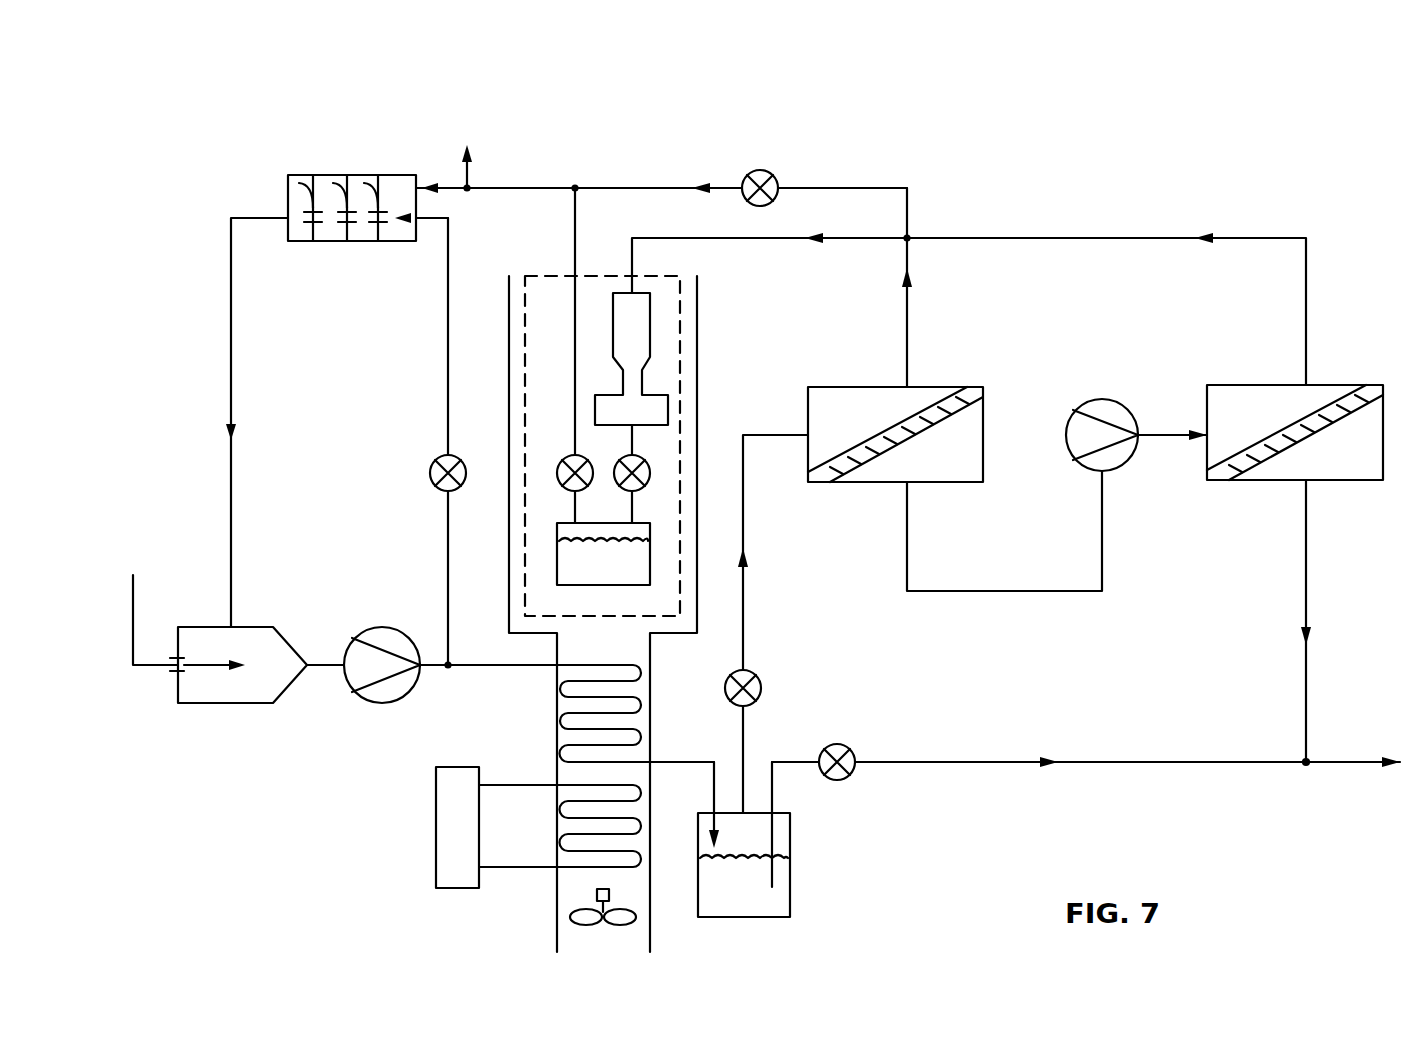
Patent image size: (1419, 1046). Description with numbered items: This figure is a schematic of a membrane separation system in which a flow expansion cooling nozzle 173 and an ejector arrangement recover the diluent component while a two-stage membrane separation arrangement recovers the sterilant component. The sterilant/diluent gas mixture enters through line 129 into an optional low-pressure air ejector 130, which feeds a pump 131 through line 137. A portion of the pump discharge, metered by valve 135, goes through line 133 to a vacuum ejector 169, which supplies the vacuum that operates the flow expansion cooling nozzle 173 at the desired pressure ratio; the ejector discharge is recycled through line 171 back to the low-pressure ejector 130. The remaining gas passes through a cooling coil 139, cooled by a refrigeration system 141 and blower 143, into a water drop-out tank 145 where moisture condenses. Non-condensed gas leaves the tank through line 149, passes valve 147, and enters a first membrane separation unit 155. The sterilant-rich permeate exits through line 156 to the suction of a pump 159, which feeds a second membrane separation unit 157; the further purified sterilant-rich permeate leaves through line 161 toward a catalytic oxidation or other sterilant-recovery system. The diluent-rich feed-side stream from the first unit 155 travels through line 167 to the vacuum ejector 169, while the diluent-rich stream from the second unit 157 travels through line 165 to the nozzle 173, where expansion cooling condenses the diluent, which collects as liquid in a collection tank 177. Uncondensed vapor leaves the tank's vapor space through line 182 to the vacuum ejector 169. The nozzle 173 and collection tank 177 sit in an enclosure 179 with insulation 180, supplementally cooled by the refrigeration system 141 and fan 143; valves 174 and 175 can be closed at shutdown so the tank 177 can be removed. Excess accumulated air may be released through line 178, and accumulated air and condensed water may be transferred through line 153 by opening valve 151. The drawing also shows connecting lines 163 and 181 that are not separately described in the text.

The line 129 is at (133, 578).
The low-pressure air ejector 130 is at (248, 703).
The pump 131 is at (380, 627).
The line 133 is at (447, 548).
The valve 135 is at (436, 461).
The line 137 is at (508, 667).
The cooling coil 139 is at (566, 694).
The refrigeration system 141 is at (436, 805).
The blower 143 is at (588, 924).
The water drop-out tank 145 is at (790, 878).
The valve 147 is at (752, 676).
The line 149 is at (745, 497).
The valve 151 is at (842, 746).
The line 153 is at (945, 762).
The first membrane separation unit 155 is at (945, 387).
The line 156 is at (1030, 591).
The second membrane separation unit 157 is at (1345, 385).
The pump 159 is at (1105, 400).
The line 161 is at (1305, 565).
The line 163 is at (907, 316).
The line 165 is at (1040, 238).
The line 167 is at (778, 178).
The vacuum ejector 169 is at (323, 241).
The line 171 is at (231, 328).
The flow expansion cooling nozzle 173 is at (613, 350).
The valve 174 is at (652, 468).
The valve 175 is at (565, 456).
The collection tank 177 is at (557, 552).
The line 178 is at (467, 177).
The enclosure 179 is at (698, 352).
The insulation 180 is at (556, 276).
The line 181 is at (575, 246).
The line 182 is at (547, 187).